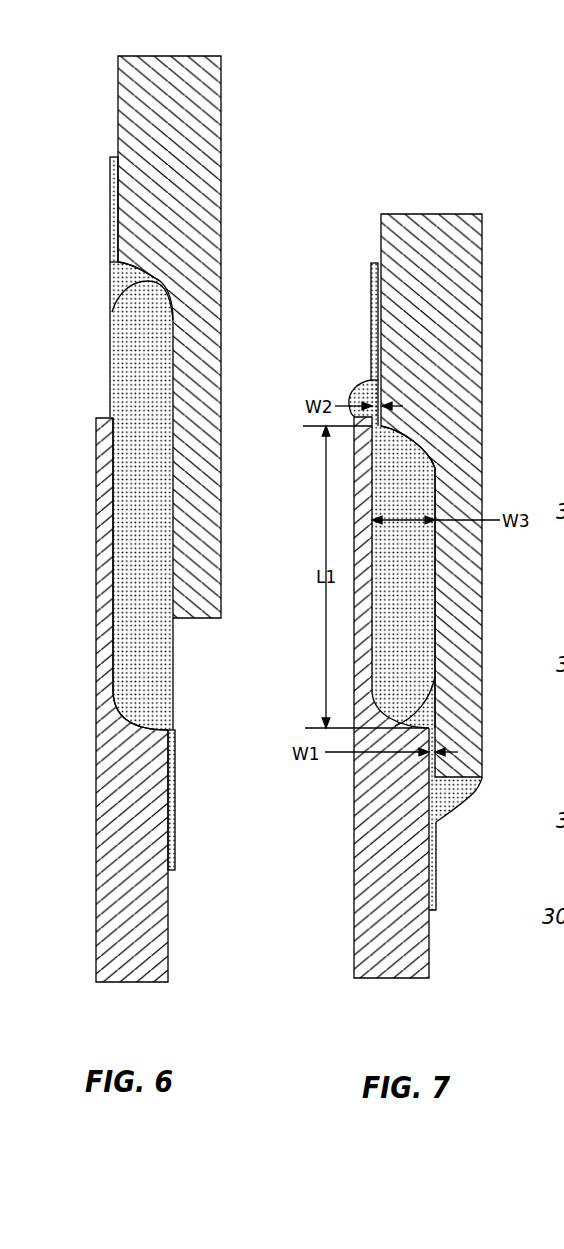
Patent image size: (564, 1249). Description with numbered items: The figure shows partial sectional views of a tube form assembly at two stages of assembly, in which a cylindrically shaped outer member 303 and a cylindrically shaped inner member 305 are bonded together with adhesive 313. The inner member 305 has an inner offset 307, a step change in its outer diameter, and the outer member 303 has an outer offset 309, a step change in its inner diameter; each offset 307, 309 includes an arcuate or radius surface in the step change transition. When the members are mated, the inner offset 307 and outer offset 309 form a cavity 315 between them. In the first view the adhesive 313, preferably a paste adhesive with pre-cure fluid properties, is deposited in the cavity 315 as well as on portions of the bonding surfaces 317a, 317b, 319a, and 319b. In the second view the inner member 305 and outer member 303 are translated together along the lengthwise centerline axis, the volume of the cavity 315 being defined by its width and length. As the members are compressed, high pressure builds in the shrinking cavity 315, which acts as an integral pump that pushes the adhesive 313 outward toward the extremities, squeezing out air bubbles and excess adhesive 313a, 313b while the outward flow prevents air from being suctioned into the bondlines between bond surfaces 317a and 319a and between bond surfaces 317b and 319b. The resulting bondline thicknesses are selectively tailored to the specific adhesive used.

In FIG. 6, the outer member 303 is at (169, 942).
In FIG. 7, the outer member 303 is at (430, 940).
In FIG. 6, the inner member 305 is at (221, 97).
In FIG. 7, the inner member 305 is at (433, 214).
In FIG. 6, the inner offset 307 is at (112, 312).
In FIG. 7, the inner offset 307 is at (435, 447).
In FIG. 6, the outer offset 309 is at (173, 692).
In FIG. 7, the outer offset 309 is at (435, 677).
In FIG. 6, the adhesive 313 is at (143, 398).
In FIG. 7, the adhesive 313 is at (409, 497).
In FIG. 7, the excess adhesive 313a is at (362, 385).
In FIG. 7, the excess adhesive 313b is at (440, 808).
In FIG. 6, the cavity 315 is at (144, 548).
In FIG. 7, the cavity 315 is at (411, 649).
In FIG. 6, the bonding surface 317a is at (171, 584).
In FIG. 6, the bonding surface 317b is at (118, 240).
In FIG. 6, the bonding surface 319a is at (171, 802).
In FIG. 6, the bonding surface 319b is at (119, 449).